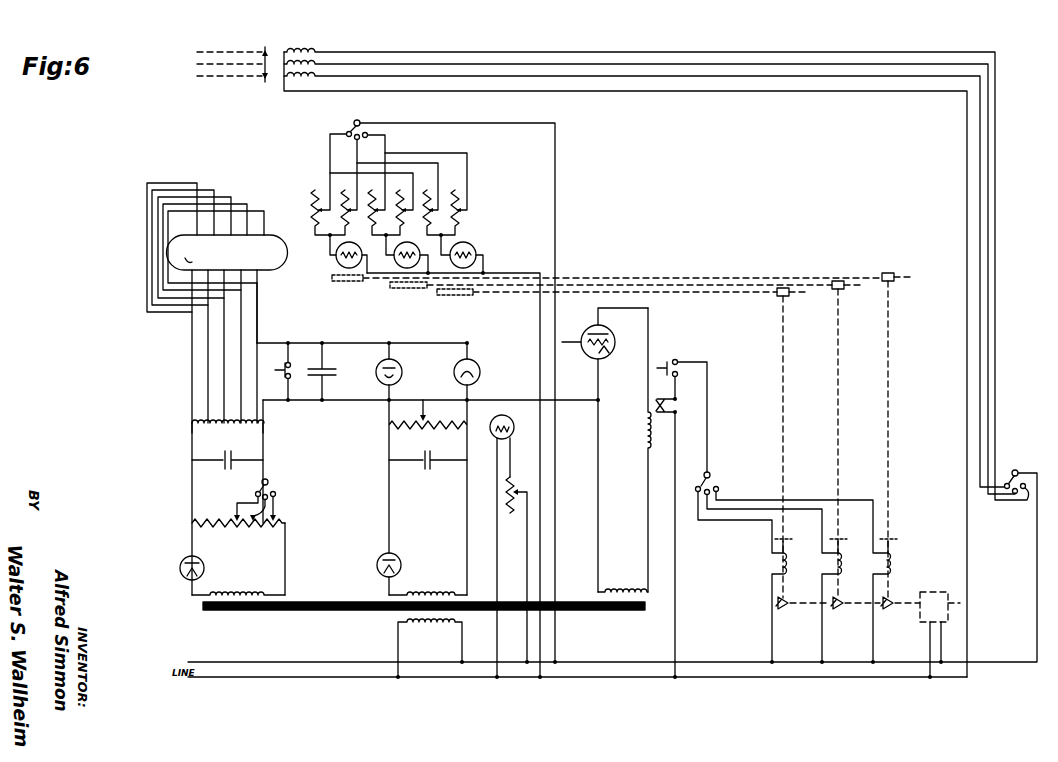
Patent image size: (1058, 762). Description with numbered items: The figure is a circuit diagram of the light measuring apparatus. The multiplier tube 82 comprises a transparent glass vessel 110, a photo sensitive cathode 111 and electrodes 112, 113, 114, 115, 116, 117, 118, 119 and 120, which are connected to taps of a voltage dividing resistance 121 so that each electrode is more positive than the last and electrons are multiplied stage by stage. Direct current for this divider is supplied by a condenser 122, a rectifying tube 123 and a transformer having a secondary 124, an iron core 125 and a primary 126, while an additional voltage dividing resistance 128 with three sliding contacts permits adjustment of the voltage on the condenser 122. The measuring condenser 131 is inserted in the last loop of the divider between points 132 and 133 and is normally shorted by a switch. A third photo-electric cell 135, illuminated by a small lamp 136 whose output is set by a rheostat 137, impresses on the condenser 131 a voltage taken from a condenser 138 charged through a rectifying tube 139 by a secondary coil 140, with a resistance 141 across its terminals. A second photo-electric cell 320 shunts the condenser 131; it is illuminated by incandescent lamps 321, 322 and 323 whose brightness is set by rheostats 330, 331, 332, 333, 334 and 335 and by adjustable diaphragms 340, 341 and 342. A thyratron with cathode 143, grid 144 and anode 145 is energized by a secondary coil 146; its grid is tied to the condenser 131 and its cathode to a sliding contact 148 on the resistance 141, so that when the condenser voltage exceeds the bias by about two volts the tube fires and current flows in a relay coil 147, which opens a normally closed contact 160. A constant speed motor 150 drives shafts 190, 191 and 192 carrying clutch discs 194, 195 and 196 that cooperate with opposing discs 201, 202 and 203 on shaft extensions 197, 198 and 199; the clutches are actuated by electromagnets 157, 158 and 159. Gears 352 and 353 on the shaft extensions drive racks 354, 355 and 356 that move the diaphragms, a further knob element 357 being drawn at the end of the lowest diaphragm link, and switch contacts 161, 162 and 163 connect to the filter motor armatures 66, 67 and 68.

The motor armature 66 is at (644, 280).
The motor armature 67 is at (649, 278).
The motor armature 68 is at (656, 275).
The multiplier tube 82 is at (276, 270).
The transparent glass vessel 110 is at (276, 235).
The photo sensitive cathode 111 is at (184, 256).
The electrode 112 is at (183, 247).
The electrode 113 is at (206, 340).
The electrode 114 is at (194, 247).
The electrode 115 is at (222, 340).
The electrode 116 is at (205, 247).
The electrode 117 is at (239, 340).
The electrode 118 is at (216, 247).
The electrode 119 is at (255, 340).
The electrode 120 is at (264, 293).
The voltage dividing resistance 121 is at (209, 432).
The condenser 122 is at (227, 466).
The rectifying tube 123 is at (207, 560).
The secondary 124 is at (238, 585).
The iron core 125 is at (424, 598).
The primary 126 is at (430, 648).
The voltage dividing resistance 128 is at (238, 531).
The condenser 131 is at (328, 371).
The point 132 is at (251, 434).
The point 133 is at (240, 427).
The third photo-electric cell 135 is at (474, 371).
The small lamp 136 is at (509, 419).
The rheostat 137 is at (522, 567).
The condenser 138 is at (428, 469).
The rectifying tube 139 is at (398, 566).
The secondary coil 140 is at (428, 585).
The resistance 141 is at (428, 497).
The cathode 143 is at (592, 358).
The grid 144 is at (584, 353).
The anode 145 is at (588, 331).
The secondary coil 146 is at (623, 582).
The relay coil 147 is at (634, 450).
The sliding contact 148 is at (435, 410).
The constant speed motor 150 is at (940, 634).
The electromagnet 157 is at (755, 577).
The electromagnet 158 is at (786, 578).
The electromagnet 159 is at (817, 577).
The contact 160 is at (664, 530).
The contact 161 is at (1005, 490).
The contact 162 is at (1014, 495).
The contact 163 is at (1023, 490).
The shaft 190 is at (803, 595).
The shaft 191 is at (855, 595).
The shaft 192 is at (900, 595).
The clutch disc 194 is at (798, 548).
The clutch disc 195 is at (852, 548).
The clutch disc 196 is at (903, 548).
The shaft extension 197 is at (796, 447).
The shaft extension 198 is at (851, 443).
The shaft extension 199 is at (901, 439).
The opposing disc 201 is at (791, 532).
The opposing disc 202 is at (846, 532).
The opposing disc 203 is at (897, 531).
The second photo-electric cell 320 is at (395, 371).
The incandescent lamp 321 is at (358, 255).
The incandescent lamp 322 is at (416, 255).
The incandescent lamp 323 is at (474, 255).
The rheostat 330 is at (328, 184).
The rheostat 331 is at (345, 197).
The rheostat 332 is at (377, 185).
The rheostat 333 is at (372, 214).
The rheostat 334 is at (399, 199).
The rheostat 335 is at (427, 204).
The adjustable diaphragm 340 is at (607, 287).
The adjustable diaphragm 341 is at (611, 294).
The adjustable diaphragm 342 is at (607, 301).
The gear 352 is at (832, 289).
The gear 353 is at (882, 283).
The rack 354 is at (762, 291).
The rack 355 is at (853, 289).
The rack 356 is at (898, 283).
The knob 357 is at (780, 297).